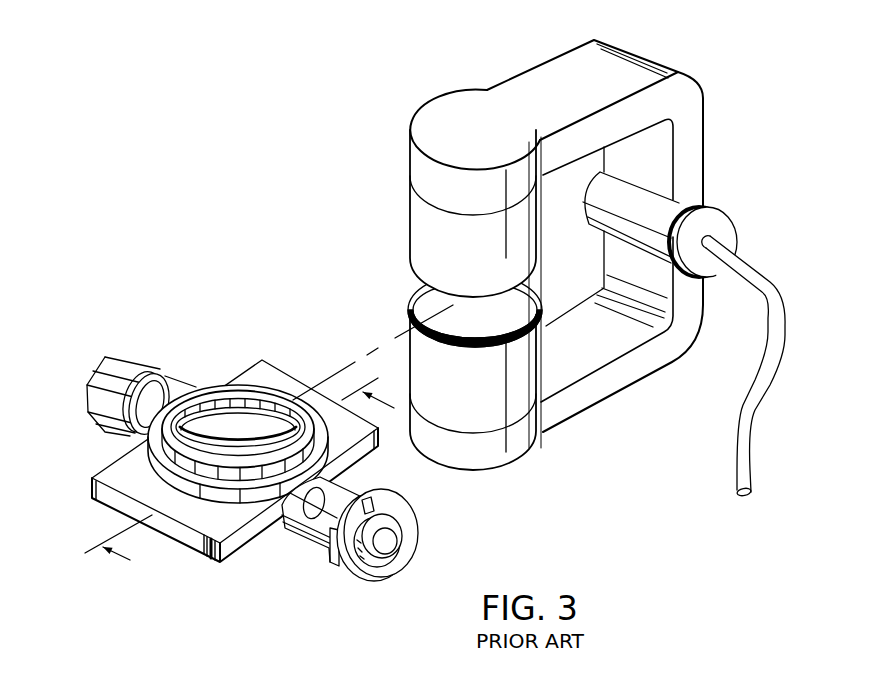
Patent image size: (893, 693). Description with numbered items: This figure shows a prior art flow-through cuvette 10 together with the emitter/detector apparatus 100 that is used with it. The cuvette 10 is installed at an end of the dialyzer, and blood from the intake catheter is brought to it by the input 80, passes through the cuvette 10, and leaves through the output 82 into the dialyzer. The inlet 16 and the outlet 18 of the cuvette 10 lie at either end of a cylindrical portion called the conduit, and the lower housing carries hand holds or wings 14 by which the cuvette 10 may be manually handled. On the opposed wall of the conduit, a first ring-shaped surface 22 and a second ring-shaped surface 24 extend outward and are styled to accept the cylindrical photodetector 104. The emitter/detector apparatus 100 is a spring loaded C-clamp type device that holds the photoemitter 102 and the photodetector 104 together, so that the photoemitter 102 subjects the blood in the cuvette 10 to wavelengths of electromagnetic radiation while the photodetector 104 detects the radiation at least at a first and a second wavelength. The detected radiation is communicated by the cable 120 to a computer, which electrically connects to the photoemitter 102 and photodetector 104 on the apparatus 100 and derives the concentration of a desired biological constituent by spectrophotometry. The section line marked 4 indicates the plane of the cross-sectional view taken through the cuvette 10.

The emitter/detector apparatus 100 is at (575, 261).
The photoemitter 102 is at (518, 402).
The photodetector 104 is at (422, 234).
The cable 120 is at (752, 392).
The cuvette 10 is at (243, 459).
The wings 14 is at (190, 522).
The inlet 16 is at (165, 400).
The outlet 18 is at (313, 543).
The first ring-shaped surface 22 is at (240, 405).
The second ring-shaped surface 24 is at (278, 387).
The input 80 is at (107, 374).
The output 82 is at (399, 505).
The section line 4- 4 is at (269, 446).